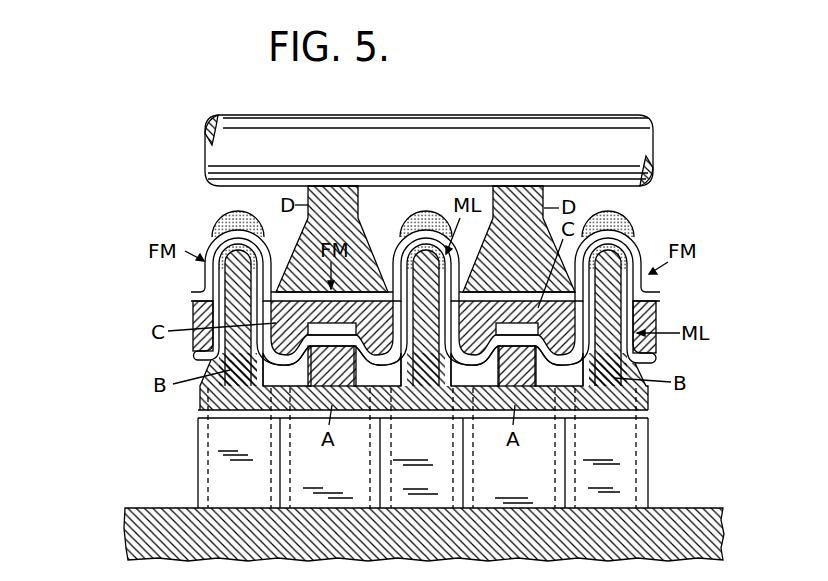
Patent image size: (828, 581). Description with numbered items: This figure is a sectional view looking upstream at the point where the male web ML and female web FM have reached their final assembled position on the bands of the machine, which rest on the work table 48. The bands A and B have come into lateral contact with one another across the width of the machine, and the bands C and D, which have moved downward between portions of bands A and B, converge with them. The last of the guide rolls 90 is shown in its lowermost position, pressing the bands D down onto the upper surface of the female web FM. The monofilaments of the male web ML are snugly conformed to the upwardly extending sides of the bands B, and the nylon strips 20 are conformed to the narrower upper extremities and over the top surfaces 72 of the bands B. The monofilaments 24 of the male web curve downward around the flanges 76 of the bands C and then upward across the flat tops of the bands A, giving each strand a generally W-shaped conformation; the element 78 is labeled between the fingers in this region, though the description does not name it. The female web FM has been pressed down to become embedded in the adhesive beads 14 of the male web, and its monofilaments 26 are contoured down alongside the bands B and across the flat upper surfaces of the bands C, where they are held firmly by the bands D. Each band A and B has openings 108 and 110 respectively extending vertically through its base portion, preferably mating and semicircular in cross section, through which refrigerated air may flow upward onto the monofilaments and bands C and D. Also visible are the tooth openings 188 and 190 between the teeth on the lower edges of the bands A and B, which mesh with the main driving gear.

The guide rolls 90 is at (501, 120).
The adhesive beads 14 is at (216, 215).
The top surfaces 72 is at (600, 244).
The monofilaments 26 is at (382, 252).
The nylon strips 20 is at (222, 261).
The monofilaments 24 is at (185, 348).
The support block 78 is at (326, 318).
The flanges 76 is at (268, 344).
The tooth openings 190 is at (210, 405).
The openings 110 is at (263, 473).
The tooth openings 188 is at (350, 409).
The openings 108 is at (547, 470).
The work table 48 is at (127, 520).